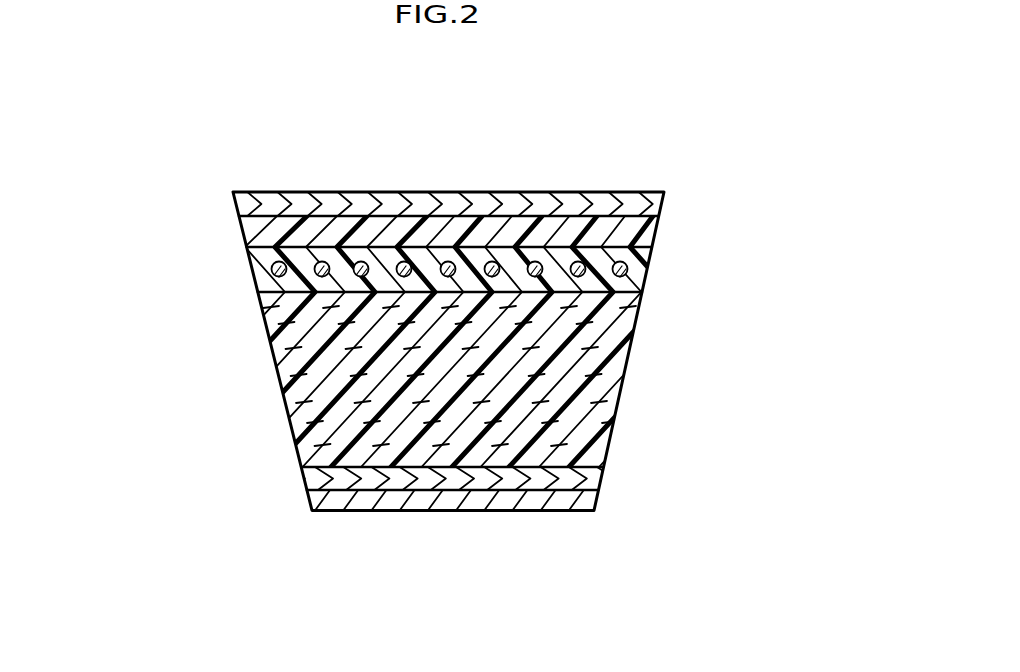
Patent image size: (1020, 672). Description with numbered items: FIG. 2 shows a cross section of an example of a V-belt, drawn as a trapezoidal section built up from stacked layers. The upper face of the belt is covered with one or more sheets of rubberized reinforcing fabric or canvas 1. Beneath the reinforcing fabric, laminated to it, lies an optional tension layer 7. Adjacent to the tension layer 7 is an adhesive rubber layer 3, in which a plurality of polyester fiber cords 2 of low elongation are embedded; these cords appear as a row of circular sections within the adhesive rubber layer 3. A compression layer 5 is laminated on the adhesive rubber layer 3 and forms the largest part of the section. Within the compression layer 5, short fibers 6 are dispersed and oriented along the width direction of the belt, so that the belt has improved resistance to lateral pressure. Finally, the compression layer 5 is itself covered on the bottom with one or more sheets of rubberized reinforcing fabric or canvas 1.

The rubberized reinforcing fabric or canvas 1 is at (613, 197).
The polyester fiber cords 2 is at (297, 296).
The adhesive rubber layer 3 is at (638, 272).
The compression layer 5 is at (580, 403).
The short fibers 6 is at (363, 403).
The tension layer 7 is at (618, 233).